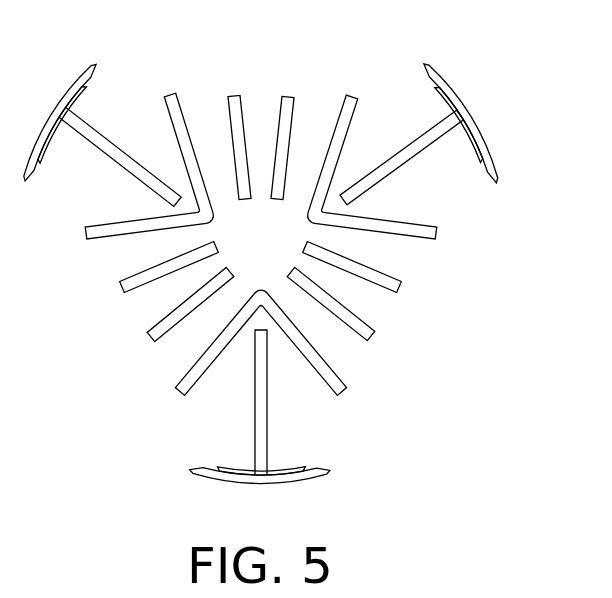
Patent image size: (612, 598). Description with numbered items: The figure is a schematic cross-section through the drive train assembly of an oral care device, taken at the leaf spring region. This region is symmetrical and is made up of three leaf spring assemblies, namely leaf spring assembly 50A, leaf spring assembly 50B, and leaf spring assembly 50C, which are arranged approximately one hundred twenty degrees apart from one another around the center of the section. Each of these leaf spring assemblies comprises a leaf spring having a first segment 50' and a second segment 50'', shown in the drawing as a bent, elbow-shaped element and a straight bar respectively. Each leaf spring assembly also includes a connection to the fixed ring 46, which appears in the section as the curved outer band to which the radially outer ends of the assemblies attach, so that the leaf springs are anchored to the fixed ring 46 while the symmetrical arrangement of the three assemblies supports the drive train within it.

The fixed ring 46 is at (493, 160).
The leaf spring assembly 50A is at (102, 133).
The leaf spring assembly 50B is at (428, 124).
The leaf spring assembly 50C is at (260, 406).
The first segment 50' is at (372, 128).
The second segment 50'' is at (404, 164).